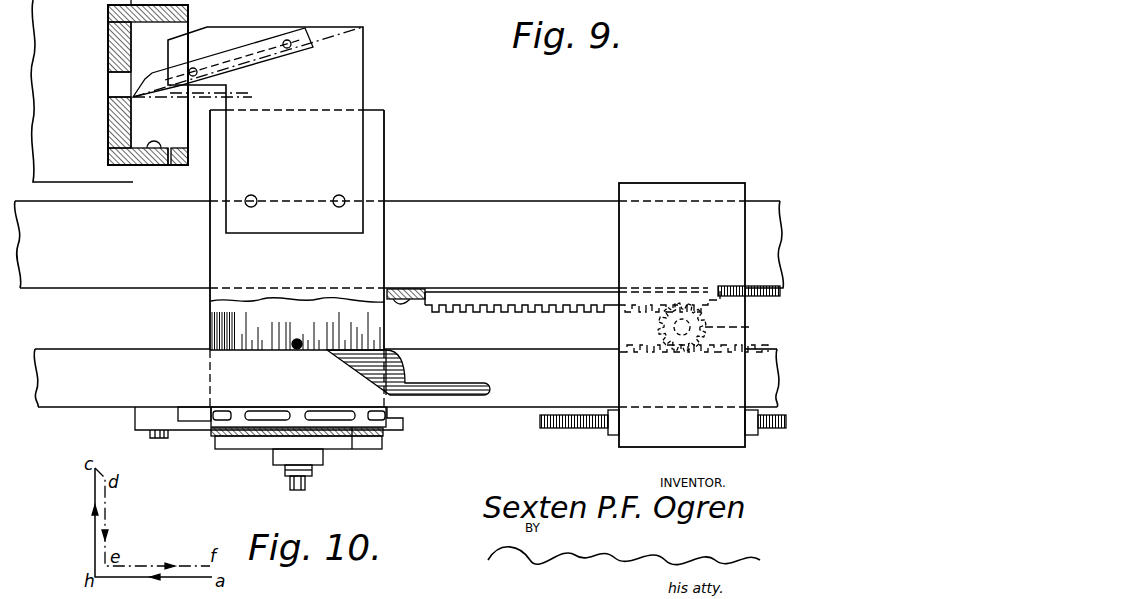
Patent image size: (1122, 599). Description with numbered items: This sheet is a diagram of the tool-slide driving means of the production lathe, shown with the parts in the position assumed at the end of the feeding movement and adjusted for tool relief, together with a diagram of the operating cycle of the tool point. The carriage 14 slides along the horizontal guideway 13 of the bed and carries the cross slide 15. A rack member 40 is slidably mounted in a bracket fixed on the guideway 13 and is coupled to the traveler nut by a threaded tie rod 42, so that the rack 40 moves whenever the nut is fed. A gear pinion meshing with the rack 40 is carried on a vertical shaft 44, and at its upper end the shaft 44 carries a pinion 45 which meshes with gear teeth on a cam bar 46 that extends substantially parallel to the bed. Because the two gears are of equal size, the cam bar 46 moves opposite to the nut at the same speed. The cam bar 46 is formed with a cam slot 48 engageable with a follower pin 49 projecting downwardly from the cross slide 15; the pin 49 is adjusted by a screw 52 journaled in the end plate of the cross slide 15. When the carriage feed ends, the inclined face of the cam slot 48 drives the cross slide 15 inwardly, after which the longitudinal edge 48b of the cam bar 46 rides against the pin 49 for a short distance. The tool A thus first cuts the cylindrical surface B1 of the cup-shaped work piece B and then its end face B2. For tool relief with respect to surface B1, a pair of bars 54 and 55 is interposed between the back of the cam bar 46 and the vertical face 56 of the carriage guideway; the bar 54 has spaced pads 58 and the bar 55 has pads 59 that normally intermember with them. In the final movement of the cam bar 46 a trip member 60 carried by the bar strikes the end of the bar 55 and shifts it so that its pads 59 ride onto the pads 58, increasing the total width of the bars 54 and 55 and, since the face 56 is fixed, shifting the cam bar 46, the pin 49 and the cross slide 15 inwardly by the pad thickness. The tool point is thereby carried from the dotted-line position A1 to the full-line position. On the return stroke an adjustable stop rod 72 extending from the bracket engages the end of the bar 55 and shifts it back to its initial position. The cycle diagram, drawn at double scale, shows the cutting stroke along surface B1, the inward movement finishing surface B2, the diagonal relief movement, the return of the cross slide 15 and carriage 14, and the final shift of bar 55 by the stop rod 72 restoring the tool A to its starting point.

In FIG. 9, the tool A is at (156, 74).
In FIG. 9, the dotted-line tool position A1 is at (223, 94).
In FIG. 9, the work piece B is at (108, 110).
In FIG. 9, the cylindrical surface B1 is at (170, 165).
In FIG. 9, the end face B2 is at (88, 158).
In FIG. 10, the guideway 13 is at (527, 215).
In FIG. 10, the carriage 14 is at (403, 432).
In FIG. 10, the cross slide 15 is at (228, 305).
In FIG. 10, the rack member 40 is at (539, 290).
In FIG. 10, the threaded tie rod 42 is at (411, 288).
In FIG. 10, the shaft 44 is at (658, 327).
In FIG. 10, the pinion 45 is at (697, 334).
In FIG. 10, the cam bar 46 is at (507, 398).
In FIG. 10, the cam slot 48 is at (405, 378).
In FIG. 10, the longitudinal edge of cam bar 48b is at (296, 331).
In FIG. 10, the follower pin 49 is at (301, 342).
In FIG. 10, the screw 52 is at (290, 486).
In FIG. 10, the bar 54 is at (313, 410).
In FIG. 10, the bar 55 is at (352, 427).
In FIG. 10, the vertical face of guideway 56 is at (249, 427).
In FIG. 10, the pads 58 is at (241, 412).
In FIG. 10, the pads 59 is at (382, 438).
In FIG. 10, the trip member 60 is at (198, 427).
In FIG. 10, the adjustable stop rod 72 is at (556, 430).